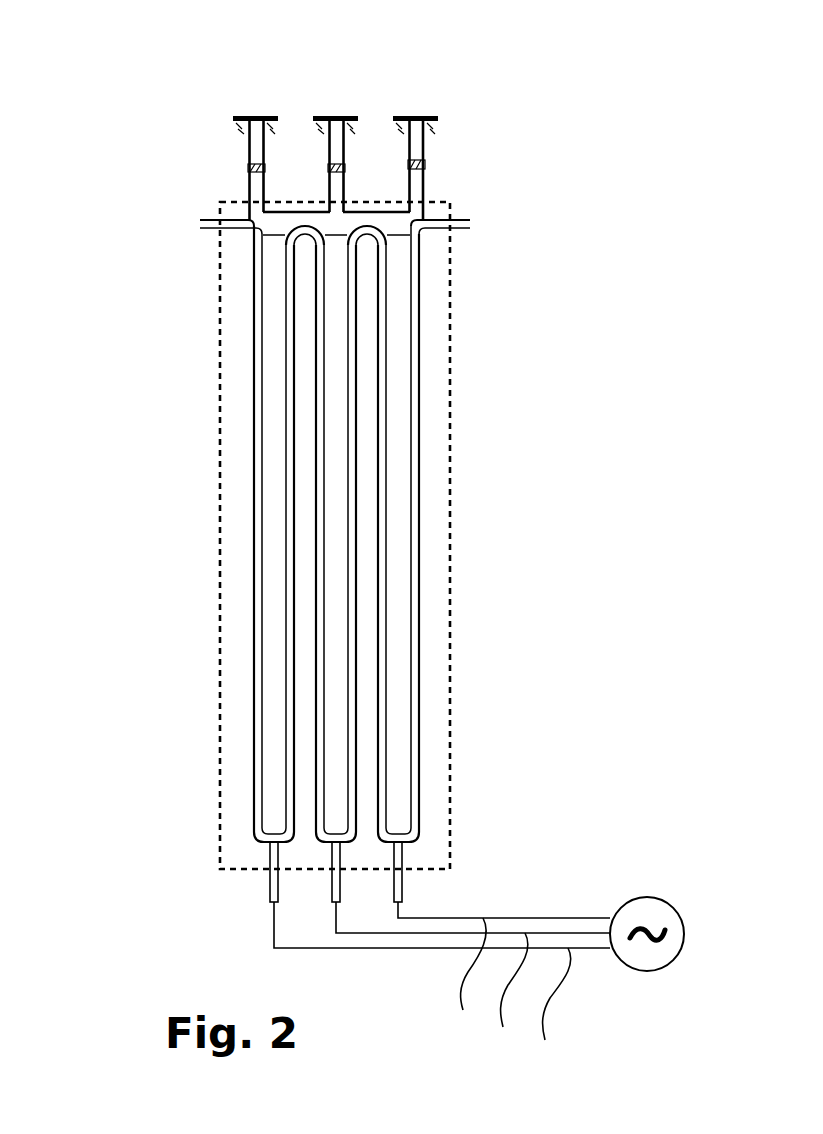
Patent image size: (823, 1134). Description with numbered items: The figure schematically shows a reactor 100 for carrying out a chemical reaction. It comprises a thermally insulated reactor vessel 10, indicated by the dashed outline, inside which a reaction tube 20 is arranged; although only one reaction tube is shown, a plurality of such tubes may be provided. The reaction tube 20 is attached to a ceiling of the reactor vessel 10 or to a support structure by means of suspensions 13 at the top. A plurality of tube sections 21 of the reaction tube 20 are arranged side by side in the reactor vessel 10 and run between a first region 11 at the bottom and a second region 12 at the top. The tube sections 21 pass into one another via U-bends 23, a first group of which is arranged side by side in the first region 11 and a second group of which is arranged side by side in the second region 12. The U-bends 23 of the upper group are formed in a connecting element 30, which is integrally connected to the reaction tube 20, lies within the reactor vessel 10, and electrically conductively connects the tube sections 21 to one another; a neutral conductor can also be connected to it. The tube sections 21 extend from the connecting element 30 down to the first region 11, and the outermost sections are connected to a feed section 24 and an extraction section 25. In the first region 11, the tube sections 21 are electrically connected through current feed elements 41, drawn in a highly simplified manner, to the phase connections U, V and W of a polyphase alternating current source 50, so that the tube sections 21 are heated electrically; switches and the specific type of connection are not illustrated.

The reactor 100 is at (166, 51).
The reactor vessel 10 is at (219, 610).
The first region 11 is at (448, 814).
The second region 12 is at (446, 256).
The suspensions 13 is at (423, 155).
The reaction tube 20 is at (250, 408).
The tube sections 21 is at (290, 323).
The U-bends 23 is at (288, 226).
The feed section 24 is at (212, 223).
The extraction section 25 is at (464, 222).
The connecting element 30 is at (423, 216).
The current feed elements 41 is at (270, 884).
The polyphase alternating current source 50 is at (672, 958).